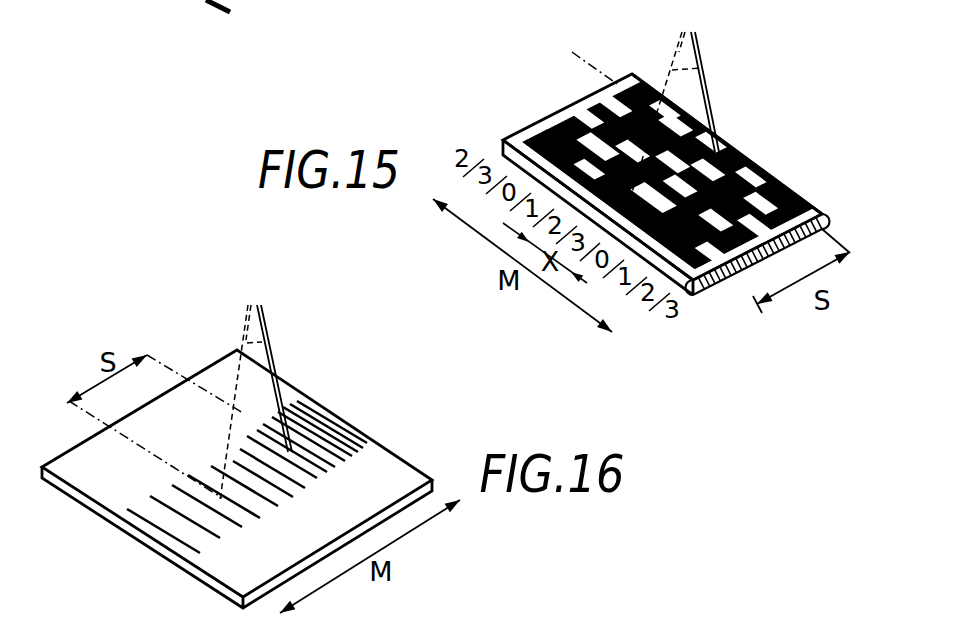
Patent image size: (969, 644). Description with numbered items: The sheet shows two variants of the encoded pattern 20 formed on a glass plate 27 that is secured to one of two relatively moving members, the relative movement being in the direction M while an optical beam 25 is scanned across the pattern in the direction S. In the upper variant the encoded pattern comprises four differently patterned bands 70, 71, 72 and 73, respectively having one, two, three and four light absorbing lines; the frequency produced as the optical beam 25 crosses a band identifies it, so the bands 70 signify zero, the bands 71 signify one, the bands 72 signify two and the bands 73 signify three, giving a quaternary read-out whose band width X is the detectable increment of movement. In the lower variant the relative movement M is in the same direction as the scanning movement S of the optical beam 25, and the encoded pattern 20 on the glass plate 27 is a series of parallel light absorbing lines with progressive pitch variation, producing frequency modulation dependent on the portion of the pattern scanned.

In FIG. 15, the encoded pattern 20 is at (540, 148).
In FIG. 16, the encoded pattern 20 is at (172, 483).
In FIG. 15, the optical beam 25 is at (702, 67).
In FIG. 16, the optical beam 25 is at (270, 345).
In FIG. 15, the glass plate 27 is at (753, 163).
In FIG. 16, the glass plate 27 is at (95, 512).
In FIG. 15, the patterned band 70 is at (692, 228).
In FIG. 15, the patterned band 71 is at (742, 232).
In FIG. 15, the patterned band 72 is at (784, 200).
In FIG. 15, the patterned band 73 is at (722, 165).